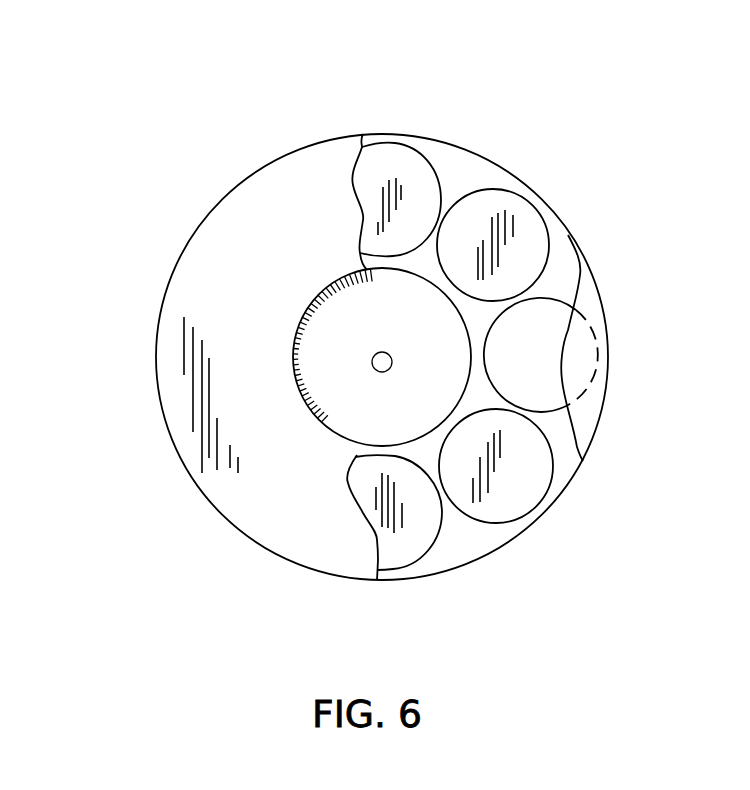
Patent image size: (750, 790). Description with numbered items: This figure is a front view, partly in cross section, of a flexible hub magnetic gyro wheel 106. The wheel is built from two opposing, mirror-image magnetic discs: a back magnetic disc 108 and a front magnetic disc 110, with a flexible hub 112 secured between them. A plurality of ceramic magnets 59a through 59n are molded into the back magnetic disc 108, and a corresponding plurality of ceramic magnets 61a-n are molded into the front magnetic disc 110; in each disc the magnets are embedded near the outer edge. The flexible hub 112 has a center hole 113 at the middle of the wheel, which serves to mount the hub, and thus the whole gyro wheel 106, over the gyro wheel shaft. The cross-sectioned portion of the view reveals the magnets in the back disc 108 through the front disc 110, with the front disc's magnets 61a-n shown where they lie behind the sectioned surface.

The flexible hub magnetic gyro wheel 106 is at (146, 73).
The back magnetic disc 108 is at (243, 193).
The center hole 113 is at (389, 369).
The ceramic magnet 59a is at (413, 163).
The ceramic magnet 59n is at (415, 547).
The flexible hub 112 is at (497, 178).
The ceramic magnets 61a-n is at (600, 352).
The front magnetic disc 110 is at (587, 298).